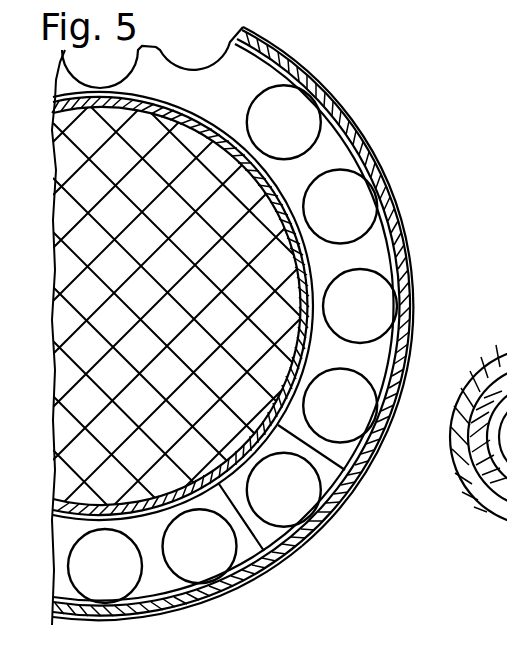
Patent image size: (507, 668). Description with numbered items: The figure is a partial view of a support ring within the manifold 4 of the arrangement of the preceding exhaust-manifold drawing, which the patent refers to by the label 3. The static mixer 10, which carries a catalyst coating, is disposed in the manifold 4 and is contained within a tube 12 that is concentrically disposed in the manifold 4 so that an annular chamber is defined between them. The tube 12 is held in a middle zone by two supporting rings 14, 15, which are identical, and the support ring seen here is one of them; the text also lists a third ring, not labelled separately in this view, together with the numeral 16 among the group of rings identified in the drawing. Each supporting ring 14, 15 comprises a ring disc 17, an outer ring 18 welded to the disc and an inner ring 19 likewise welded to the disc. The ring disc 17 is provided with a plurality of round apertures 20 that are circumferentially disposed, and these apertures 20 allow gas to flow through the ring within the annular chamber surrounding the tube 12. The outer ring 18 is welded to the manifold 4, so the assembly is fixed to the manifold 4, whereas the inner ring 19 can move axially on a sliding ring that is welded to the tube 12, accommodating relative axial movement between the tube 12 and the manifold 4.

The bearing 3 is at (478, 469).
The manifold 4 is at (220, 600).
The static mixer 10 is at (58, 298).
The tube 12 is at (272, 573).
The supporting ring 14 is at (230, 319).
The supporting ring 15 is at (230, 319).
The sheet layer 16 is at (332, 100).
The ring disc 17 is at (340, 150).
The outer ring 18 is at (405, 253).
The inner ring 19 is at (357, 492).
The round apertures 20 is at (362, 217).